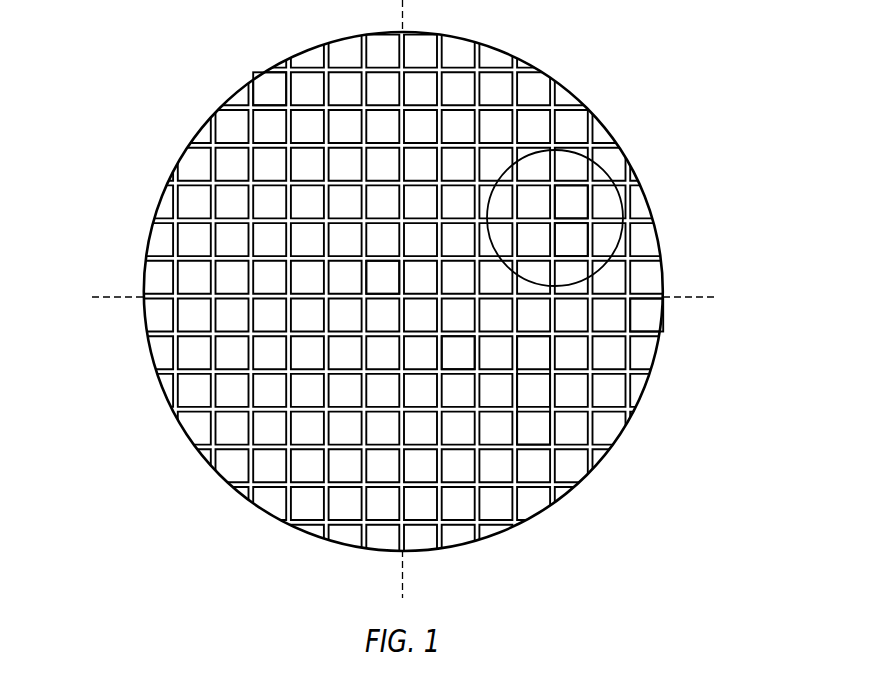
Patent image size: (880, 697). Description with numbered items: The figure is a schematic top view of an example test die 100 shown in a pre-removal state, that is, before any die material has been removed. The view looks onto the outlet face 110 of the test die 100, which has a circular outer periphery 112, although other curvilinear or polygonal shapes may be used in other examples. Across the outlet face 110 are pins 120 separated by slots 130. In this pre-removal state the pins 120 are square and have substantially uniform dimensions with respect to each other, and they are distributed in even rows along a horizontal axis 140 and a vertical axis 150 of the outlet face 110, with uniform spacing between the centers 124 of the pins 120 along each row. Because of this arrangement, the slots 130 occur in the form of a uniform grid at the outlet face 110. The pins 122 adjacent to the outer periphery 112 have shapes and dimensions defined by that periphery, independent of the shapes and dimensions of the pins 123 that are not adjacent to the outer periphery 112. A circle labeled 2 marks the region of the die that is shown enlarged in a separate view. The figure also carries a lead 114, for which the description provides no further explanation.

The test die 100 is at (523, 63).
The outlet face 110 is at (308, 207).
The outer periphery 112 is at (273, 95).
The cell wall 114 is at (398, 290).
The circle labeled 2 is at (602, 172).
The slots 130 is at (557, 207).
The pins 120 is at (577, 230).
The pins adjacent to the outer periphery 122 is at (647, 313).
The centers of the pins 124 is at (535, 428).
The pins not adjacent to the outer periphery 123 is at (455, 350).
The horizontal axis 140 is at (127, 298).
The vertical axis 150 is at (405, 572).